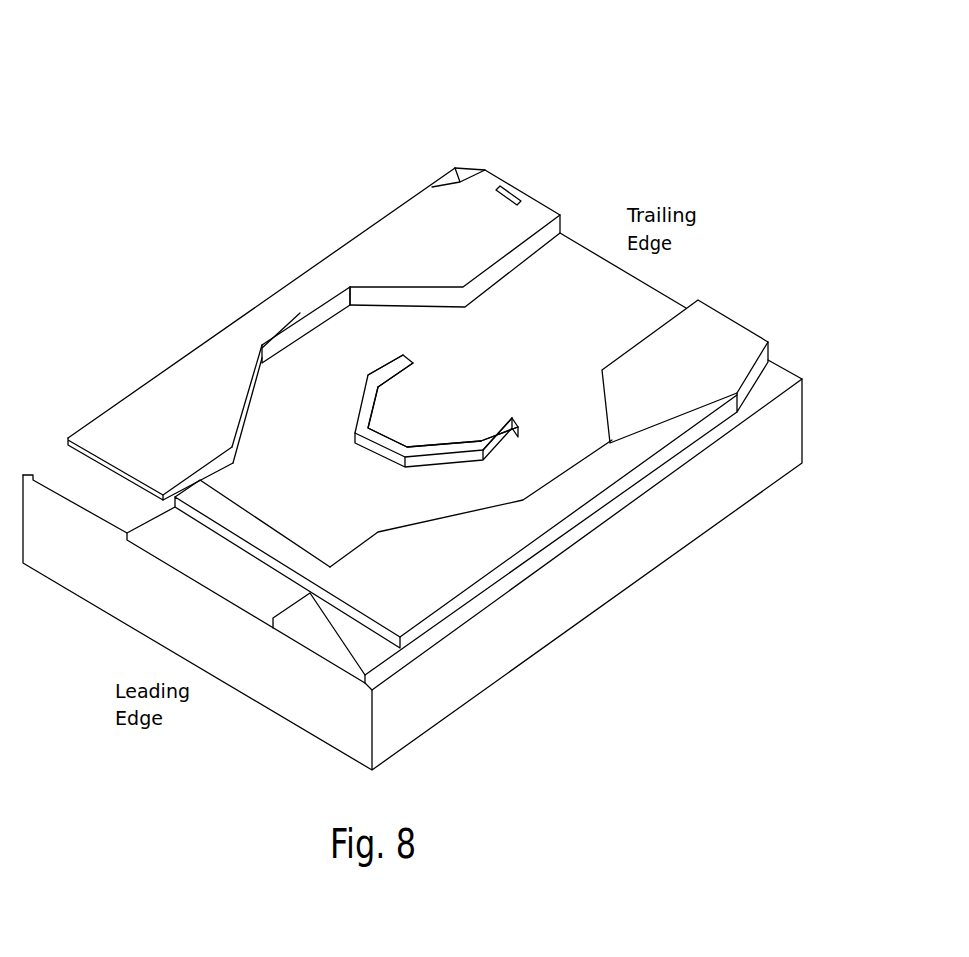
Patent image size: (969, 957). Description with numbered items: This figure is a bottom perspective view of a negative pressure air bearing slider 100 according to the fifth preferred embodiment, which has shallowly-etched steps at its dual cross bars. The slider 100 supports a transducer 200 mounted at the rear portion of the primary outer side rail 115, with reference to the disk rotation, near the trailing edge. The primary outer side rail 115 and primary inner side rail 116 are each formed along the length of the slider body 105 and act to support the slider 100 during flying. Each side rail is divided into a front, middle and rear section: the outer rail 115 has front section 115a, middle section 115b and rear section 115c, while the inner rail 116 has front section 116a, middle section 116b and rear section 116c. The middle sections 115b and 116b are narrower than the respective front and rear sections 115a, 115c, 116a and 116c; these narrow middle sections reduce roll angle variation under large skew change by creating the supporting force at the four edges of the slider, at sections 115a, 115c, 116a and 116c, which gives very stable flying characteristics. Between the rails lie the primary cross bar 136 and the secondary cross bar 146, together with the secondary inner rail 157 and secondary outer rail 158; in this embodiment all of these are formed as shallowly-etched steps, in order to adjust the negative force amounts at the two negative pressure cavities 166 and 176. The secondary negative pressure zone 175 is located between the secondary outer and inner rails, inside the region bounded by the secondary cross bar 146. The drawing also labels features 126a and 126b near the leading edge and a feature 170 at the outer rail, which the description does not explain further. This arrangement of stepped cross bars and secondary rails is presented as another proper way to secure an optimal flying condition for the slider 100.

The slider 100 is at (176, 100).
The slider body 105 is at (810, 413).
The primary outer side rail 115 is at (393, 100).
The front section of outer side rail 115a is at (142, 437).
The middle section of outer side rail 115b is at (262, 318).
The rear section of outer side rail 115c is at (397, 227).
The primary inner side rail 116 is at (782, 507).
The front section of inner side rail 116a is at (408, 577).
The middle section of inner side rail 116b is at (560, 500).
The rear section of inner side rail 116c is at (675, 388).
The leading edge step 126a is at (87, 477).
The leading edge step 126b is at (330, 627).
The primary cross bar 136 is at (245, 532).
The secondary cross bar 146 is at (383, 445).
The secondary inner rail 157 is at (410, 355).
The secondary outer rail 158 is at (512, 418).
The negative pressure cavity 166 is at (278, 500).
The rail step 170 is at (367, 332).
The secondary negative pressure zone 175 is at (545, 462).
The negative pressure cavity 176 is at (425, 423).
The transducer 200 is at (508, 188).